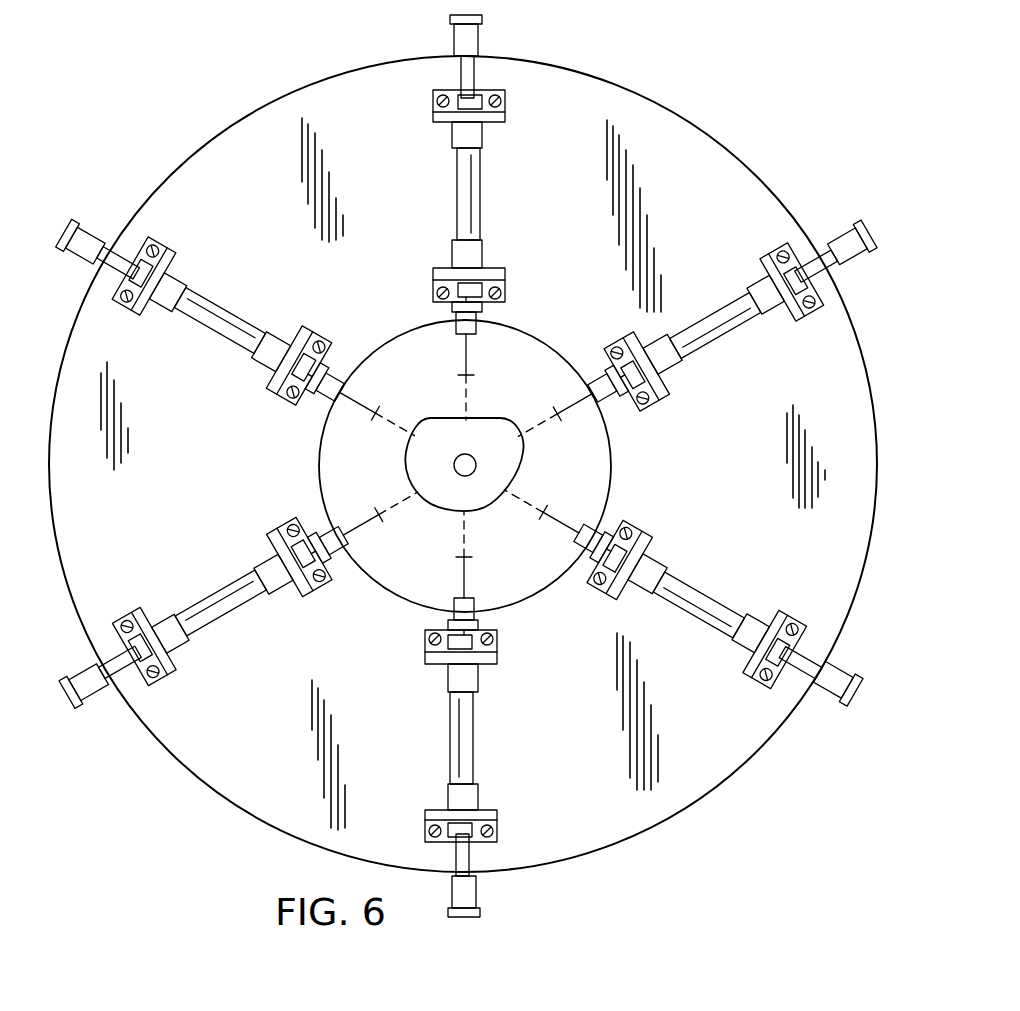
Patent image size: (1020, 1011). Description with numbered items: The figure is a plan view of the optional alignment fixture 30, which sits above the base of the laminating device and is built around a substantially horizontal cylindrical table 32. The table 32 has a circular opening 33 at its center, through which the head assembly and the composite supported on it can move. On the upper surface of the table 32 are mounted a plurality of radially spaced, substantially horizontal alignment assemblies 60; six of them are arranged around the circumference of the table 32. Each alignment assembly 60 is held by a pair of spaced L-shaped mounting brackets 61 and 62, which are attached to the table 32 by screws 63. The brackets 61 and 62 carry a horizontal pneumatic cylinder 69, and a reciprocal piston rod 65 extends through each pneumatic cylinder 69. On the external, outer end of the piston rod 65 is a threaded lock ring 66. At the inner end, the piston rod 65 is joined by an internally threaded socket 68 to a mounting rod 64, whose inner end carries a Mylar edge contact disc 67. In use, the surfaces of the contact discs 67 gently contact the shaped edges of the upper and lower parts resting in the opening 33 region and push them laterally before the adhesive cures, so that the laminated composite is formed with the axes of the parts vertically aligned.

The alignment fixture 30 is at (733, 195).
The cylindrical table 32 is at (815, 370).
The circular opening 33 is at (585, 478).
The alignment assembly 60 is at (242, 308).
The L-shaped mounting bracket 61 is at (506, 270).
The L-shaped mounting bracket 62 is at (506, 108).
The screws 63 is at (613, 343).
The mounting rod 64 is at (567, 523).
The piston rod 65 is at (822, 668).
The threaded lock ring 66 is at (863, 680).
The edge contact disc 67 is at (476, 372).
The internally threaded socket 68 is at (478, 597).
The pneumatic cylinder 69 is at (473, 196).